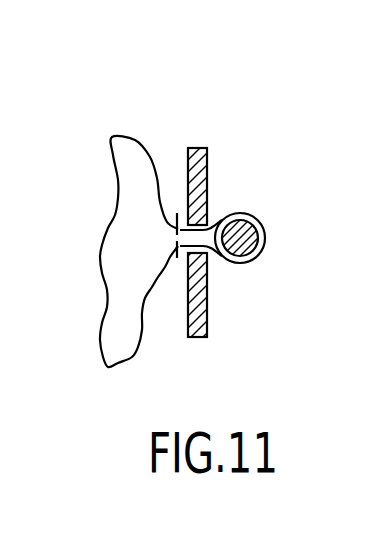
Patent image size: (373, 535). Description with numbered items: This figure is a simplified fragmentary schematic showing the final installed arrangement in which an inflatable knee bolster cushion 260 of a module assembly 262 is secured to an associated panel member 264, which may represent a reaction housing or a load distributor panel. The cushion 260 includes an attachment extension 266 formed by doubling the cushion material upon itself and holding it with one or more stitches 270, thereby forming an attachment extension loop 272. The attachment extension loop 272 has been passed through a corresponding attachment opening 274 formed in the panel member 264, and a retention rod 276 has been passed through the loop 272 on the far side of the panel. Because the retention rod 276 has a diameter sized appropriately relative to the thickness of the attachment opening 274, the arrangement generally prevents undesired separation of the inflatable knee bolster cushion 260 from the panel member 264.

The inflatable knee bolster cushion 260 is at (140, 142).
The module assembly 262 is at (268, 94).
The panel member 264 is at (199, 338).
The attachment extension 266 is at (261, 278).
The stitches 270 is at (177, 241).
The attachment extension loop 272 is at (263, 218).
The attachment opening 274 is at (207, 207).
The retention rod 276 is at (265, 232).